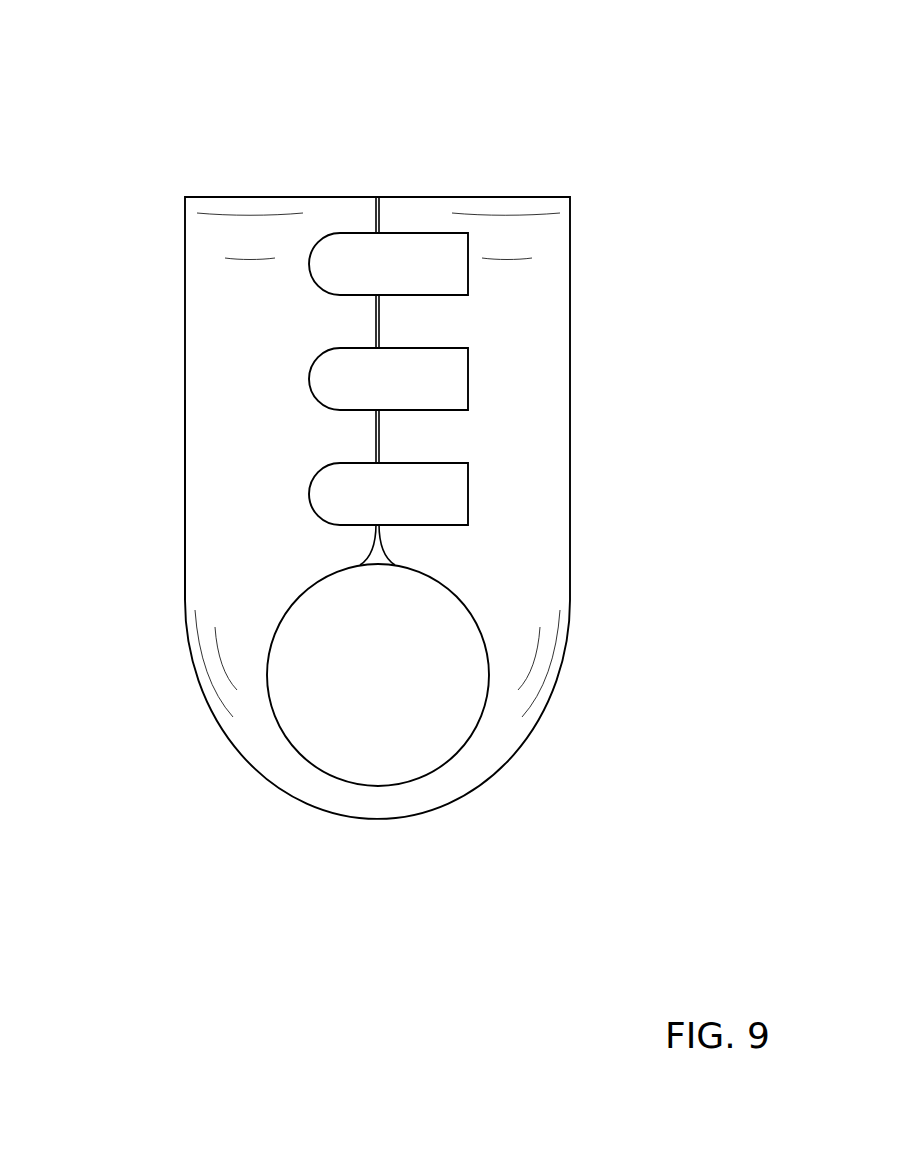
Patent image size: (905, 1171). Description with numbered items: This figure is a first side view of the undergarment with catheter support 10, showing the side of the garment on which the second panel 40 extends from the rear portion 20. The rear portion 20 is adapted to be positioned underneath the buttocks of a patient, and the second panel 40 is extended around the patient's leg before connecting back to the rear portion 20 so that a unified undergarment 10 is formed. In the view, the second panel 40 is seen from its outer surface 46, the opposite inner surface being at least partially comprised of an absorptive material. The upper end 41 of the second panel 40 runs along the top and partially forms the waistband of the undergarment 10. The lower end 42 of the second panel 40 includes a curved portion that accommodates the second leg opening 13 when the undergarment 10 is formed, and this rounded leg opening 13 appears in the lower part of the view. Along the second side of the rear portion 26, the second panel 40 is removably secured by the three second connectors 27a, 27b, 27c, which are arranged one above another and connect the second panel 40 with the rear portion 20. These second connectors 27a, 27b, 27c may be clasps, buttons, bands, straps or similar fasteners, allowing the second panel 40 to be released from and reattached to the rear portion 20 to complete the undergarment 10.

The undergarment with catheter support 10 is at (138, 76).
The second leg opening 13 is at (437, 770).
The rear portion 20 is at (572, 328).
The second side of the rear portion 26 is at (380, 435).
The second connector 27a is at (432, 264).
The second connector 27b is at (434, 377).
The second connector 27c is at (427, 497).
The second panel 40 is at (230, 353).
The upper end 41 is at (283, 197).
The lower end 42 is at (370, 565).
The outer surface 46 is at (257, 437).